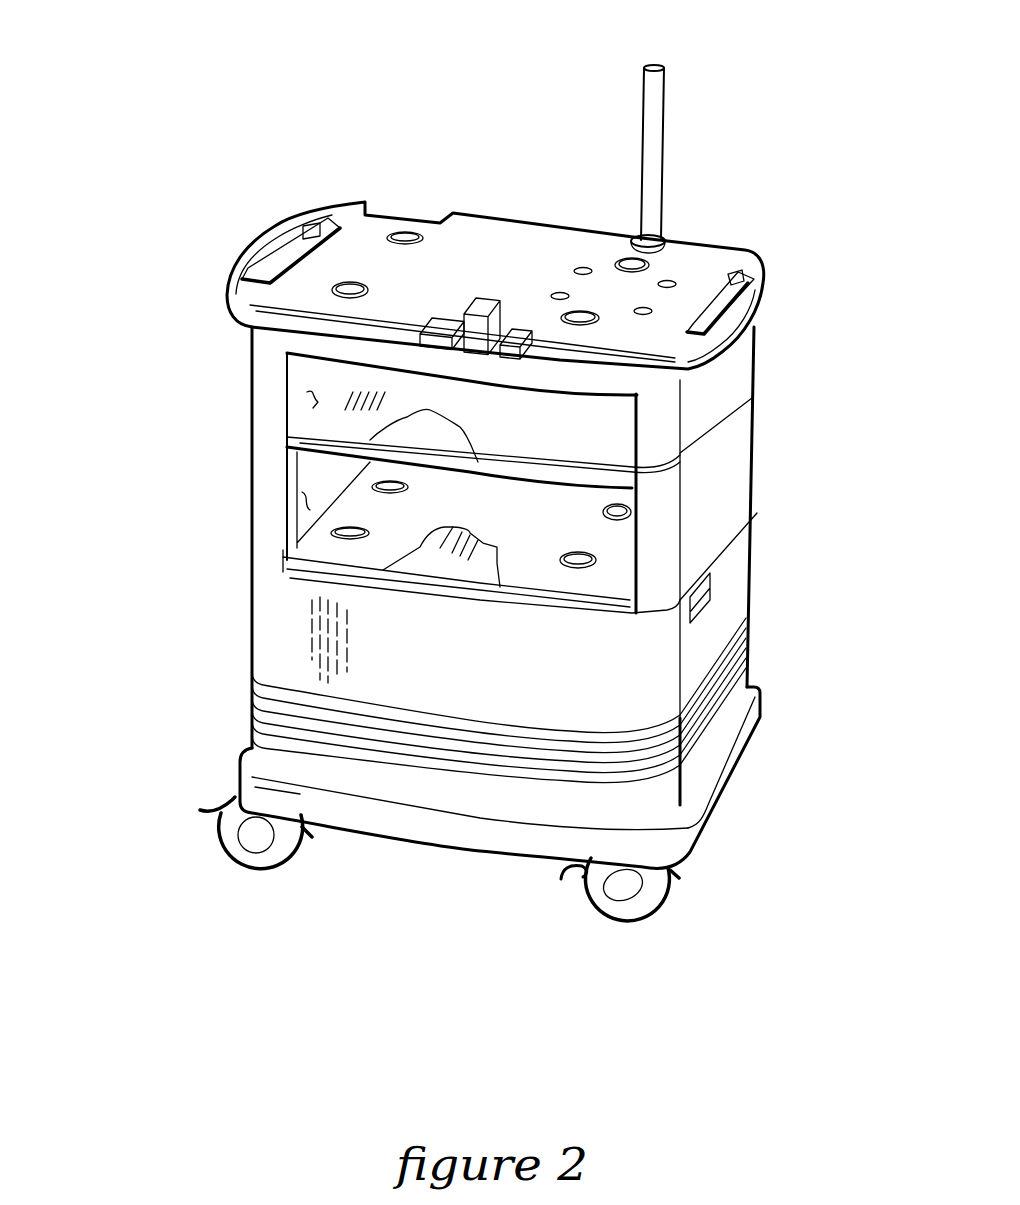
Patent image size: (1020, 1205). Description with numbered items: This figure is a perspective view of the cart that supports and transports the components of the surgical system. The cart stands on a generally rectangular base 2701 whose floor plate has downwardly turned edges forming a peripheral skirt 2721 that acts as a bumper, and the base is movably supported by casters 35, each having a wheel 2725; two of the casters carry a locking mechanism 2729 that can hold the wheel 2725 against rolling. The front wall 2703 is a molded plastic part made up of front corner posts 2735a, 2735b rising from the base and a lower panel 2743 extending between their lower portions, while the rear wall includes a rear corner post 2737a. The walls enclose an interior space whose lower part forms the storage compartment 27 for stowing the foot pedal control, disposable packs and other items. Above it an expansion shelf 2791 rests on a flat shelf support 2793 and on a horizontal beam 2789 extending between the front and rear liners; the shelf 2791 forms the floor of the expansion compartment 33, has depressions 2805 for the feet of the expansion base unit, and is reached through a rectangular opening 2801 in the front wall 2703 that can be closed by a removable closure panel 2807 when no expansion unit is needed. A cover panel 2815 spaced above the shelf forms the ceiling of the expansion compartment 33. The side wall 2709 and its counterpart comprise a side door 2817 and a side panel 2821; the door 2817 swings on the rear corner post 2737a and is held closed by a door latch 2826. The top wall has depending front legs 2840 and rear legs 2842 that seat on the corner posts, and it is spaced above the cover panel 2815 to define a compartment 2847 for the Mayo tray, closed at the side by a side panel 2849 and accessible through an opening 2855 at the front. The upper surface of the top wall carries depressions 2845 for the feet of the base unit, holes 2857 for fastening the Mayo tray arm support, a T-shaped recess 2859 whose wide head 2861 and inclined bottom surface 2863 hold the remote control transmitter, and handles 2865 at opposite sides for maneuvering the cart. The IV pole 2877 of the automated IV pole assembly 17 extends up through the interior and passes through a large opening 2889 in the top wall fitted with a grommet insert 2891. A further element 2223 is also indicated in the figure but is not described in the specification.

The automated IV pole assembly 17 is at (684, 122).
The IV pole 2877 is at (642, 93).
The opening 2855 is at (251, 345).
The handles 2865 is at (264, 262).
The depressions 2845 is at (350, 282).
The holes 2857 is at (560, 294).
The T-shaped recess 2859 is at (480, 323).
The grommet insert 2891 is at (668, 283).
The large opening 2889 is at (662, 243).
The head of recess 2861 is at (421, 333).
The inclined bottom surface 2863 is at (466, 320).
The front legs 2840 is at (282, 374).
The Mayo tray compartment 2847 is at (282, 402).
The cover panel 2815 is at (296, 412).
The side wall 2709 is at (305, 467).
The clip 2223 is at (305, 520).
The expansion shelf 2791 is at (315, 550).
The shelf support 2793 is at (447, 572).
The storage compartment 27 is at (499, 565).
The horizontal beam 2789 is at (440, 548).
The rectangular opening 2801 is at (626, 522).
The expansion compartment 33 is at (597, 550).
The depressions 2805 is at (577, 568).
The front wall 2703 is at (278, 607).
The rear legs 2842 is at (757, 336).
The side panel 2849 is at (717, 380).
The removable closure panel 2807 is at (724, 486).
The side panel 2821 is at (710, 517).
The door latch 2826 is at (710, 605).
The rear corner post 2737a is at (746, 572).
The side door 2817 is at (695, 655).
The front corner post 2735a is at (693, 663).
The front corner post 2735b is at (253, 672).
The lower panel 2743 is at (427, 838).
The base 2701 is at (235, 738).
The wheel 2725 is at (220, 830).
The casters 35 is at (368, 735).
The locking mechanism 2729 is at (228, 800).
The peripheral skirt 2721 is at (565, 876).